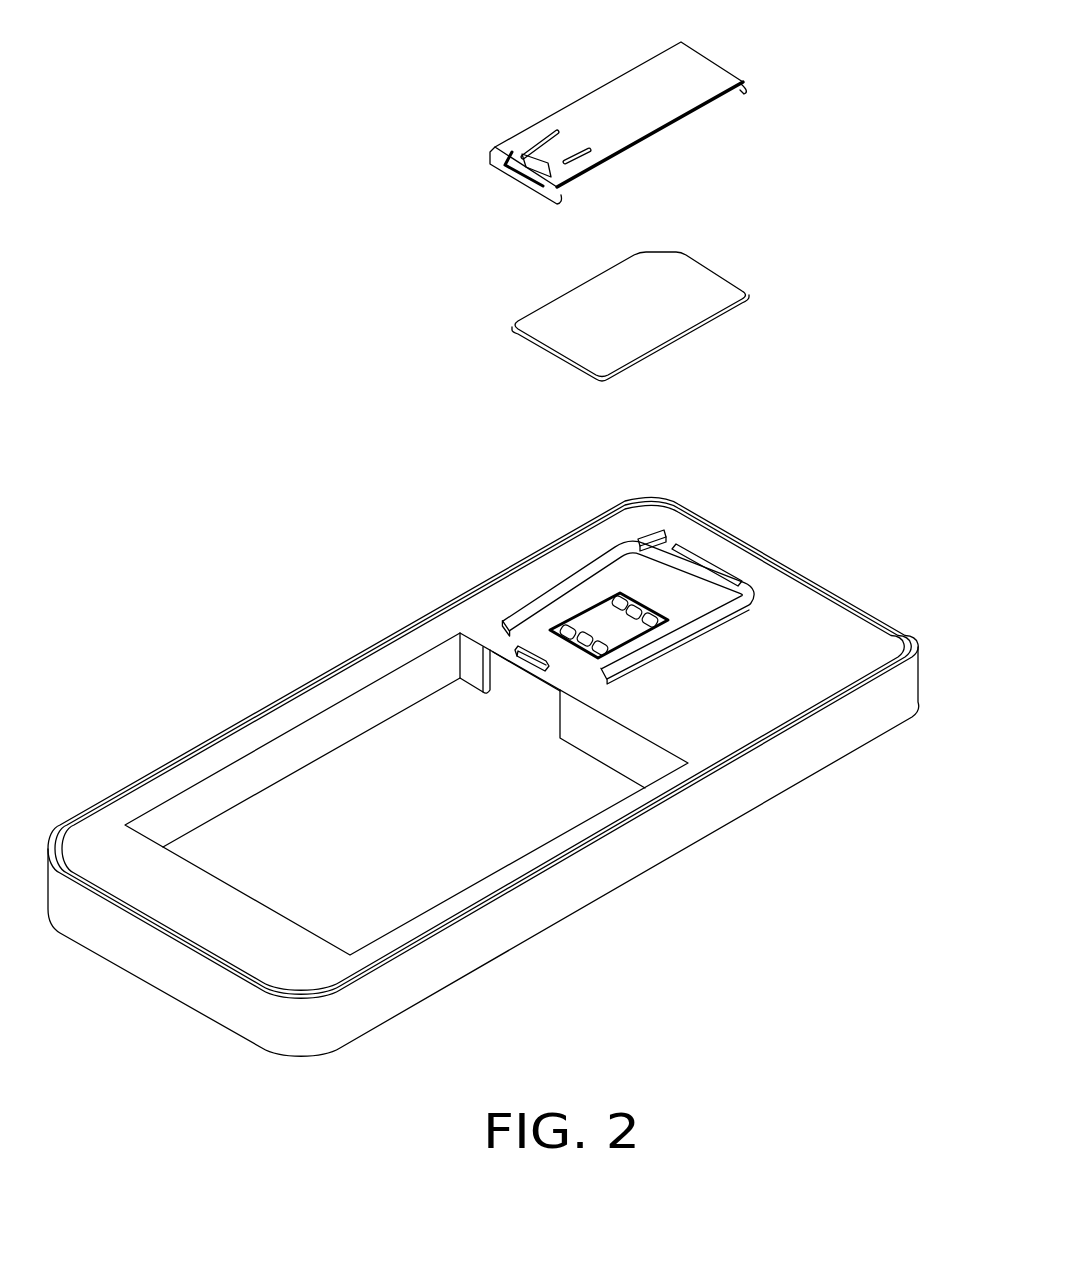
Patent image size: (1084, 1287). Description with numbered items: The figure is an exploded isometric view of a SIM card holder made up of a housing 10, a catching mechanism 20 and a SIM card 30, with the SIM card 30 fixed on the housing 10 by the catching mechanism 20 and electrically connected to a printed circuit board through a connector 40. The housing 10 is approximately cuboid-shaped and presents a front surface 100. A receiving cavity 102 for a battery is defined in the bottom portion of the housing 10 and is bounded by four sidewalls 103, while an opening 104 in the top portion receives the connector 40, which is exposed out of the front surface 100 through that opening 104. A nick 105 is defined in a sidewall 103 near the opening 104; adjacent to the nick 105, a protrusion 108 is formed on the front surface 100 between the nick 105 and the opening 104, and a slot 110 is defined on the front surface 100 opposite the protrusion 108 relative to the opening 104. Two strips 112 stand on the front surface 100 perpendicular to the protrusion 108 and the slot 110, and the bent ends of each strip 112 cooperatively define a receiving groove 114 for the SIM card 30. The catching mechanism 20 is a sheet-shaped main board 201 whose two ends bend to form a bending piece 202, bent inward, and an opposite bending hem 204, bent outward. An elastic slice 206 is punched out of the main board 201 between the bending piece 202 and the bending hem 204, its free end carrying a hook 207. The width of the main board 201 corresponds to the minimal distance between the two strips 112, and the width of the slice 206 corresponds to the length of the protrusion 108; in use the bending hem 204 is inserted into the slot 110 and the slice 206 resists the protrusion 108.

The housing 10 is at (764, 827).
The front surface 100 is at (822, 635).
The receiving cavity 102 is at (246, 818).
The sidewall 103 is at (611, 741).
The opening 104 is at (552, 627).
The nick 105 is at (515, 687).
The protrusion 108 is at (513, 655).
The slot 110 is at (690, 557).
The strip 112 is at (773, 600).
The receiving groove 114 is at (657, 567).
The connector 40 is at (602, 622).
The catching mechanism 20 is at (620, 111).
The main board 201 is at (688, 63).
The bending piece 202 is at (562, 197).
The bending hem 204 is at (747, 88).
The elastic slice 206 is at (545, 153).
The hook 207 is at (515, 142).
The SIM card 30 is at (707, 290).